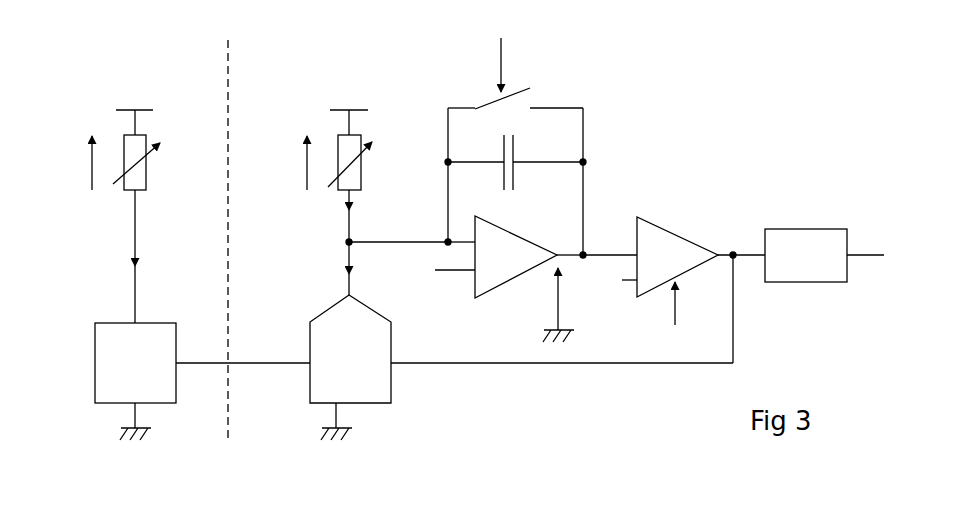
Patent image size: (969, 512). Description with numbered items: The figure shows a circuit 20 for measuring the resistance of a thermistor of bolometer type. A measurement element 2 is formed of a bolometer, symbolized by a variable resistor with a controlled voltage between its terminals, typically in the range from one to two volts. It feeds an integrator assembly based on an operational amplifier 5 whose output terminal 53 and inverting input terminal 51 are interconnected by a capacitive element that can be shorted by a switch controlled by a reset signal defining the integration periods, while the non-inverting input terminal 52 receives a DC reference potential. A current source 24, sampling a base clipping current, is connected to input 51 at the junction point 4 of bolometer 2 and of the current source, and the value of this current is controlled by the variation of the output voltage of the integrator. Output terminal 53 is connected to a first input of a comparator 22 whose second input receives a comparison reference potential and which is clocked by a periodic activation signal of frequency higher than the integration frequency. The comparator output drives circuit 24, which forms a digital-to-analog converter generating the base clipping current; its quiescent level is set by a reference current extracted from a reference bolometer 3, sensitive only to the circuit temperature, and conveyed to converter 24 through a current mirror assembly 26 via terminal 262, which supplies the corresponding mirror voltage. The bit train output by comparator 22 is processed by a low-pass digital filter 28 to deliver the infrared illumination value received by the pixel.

The measurement element 2 is at (356, 129).
The reference bolometer 3 is at (98, 114).
The junction point 4 is at (346, 243).
The operational amplifier 5 is at (521, 287).
The inverting input terminal 51 is at (447, 241).
The non-inverting input terminal 52 is at (448, 273).
The output terminal 53 is at (585, 253).
The circuit 20 is at (696, 106).
The comparator 22 is at (671, 232).
The current source 24 is at (372, 404).
The current mirror assembly 26 is at (95, 368).
The terminal 262 is at (133, 300).
The digital filter 28 is at (794, 228).